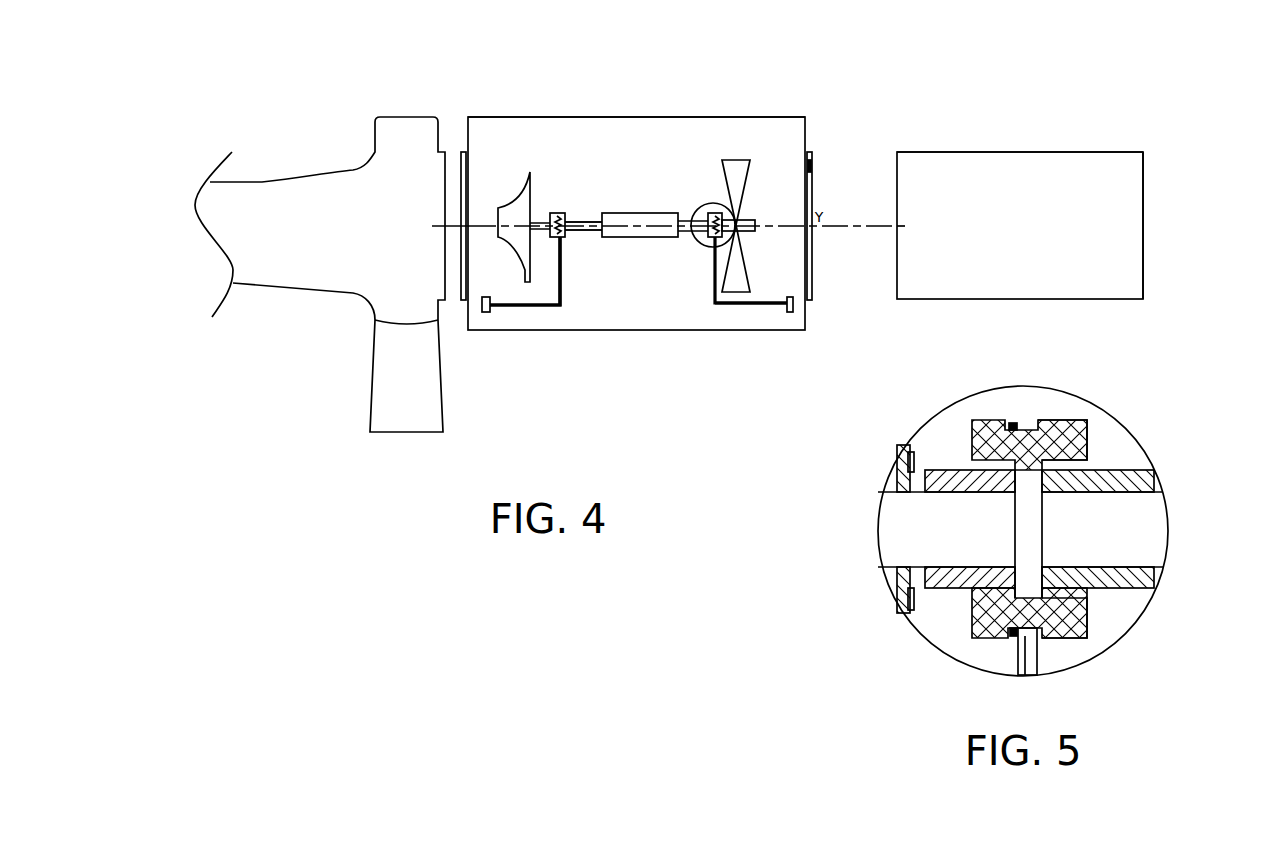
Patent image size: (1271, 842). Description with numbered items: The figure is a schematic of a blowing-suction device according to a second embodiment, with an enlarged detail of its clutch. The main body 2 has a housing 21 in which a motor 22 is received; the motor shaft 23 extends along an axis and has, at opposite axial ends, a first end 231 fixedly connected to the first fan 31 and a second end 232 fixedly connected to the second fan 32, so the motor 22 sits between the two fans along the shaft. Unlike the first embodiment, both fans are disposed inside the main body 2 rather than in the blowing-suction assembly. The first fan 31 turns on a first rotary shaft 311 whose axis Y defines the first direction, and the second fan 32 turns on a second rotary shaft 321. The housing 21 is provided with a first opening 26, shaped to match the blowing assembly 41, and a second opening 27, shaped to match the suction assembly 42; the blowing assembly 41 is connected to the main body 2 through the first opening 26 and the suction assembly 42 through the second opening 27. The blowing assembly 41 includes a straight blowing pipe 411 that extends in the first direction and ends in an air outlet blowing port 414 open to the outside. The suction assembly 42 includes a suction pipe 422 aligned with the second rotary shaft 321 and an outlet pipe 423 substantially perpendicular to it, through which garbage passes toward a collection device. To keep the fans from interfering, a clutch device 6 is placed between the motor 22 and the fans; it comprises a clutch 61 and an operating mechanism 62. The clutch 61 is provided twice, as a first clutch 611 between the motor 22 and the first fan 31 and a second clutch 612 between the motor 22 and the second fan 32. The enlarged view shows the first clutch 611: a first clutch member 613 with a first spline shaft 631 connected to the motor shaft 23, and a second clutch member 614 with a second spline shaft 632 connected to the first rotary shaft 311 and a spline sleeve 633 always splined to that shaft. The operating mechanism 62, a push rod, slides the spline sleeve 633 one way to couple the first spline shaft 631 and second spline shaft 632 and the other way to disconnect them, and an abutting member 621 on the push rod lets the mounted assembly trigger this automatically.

In FIG. 4, the main body 2 is at (767, 135).
In FIG. 4, the housing 21 is at (700, 117).
In FIG. 4, the motor 22 is at (628, 214).
In FIG. 4, the motor shaft 23 is at (598, 220).
In FIG. 5, the motor shaft 23 is at (895, 517).
In FIG. 4, the first end 231 is at (690, 226).
In FIG. 4, the second end 232 is at (585, 226).
In FIG. 4, the first opening 26 is at (810, 150).
In FIG. 4, the second opening 27 is at (463, 152).
In FIG. 4, the first fan 31 is at (738, 282).
In FIG. 4, the first rotary shaft 311 is at (773, 224).
In FIG. 5, the first rotary shaft 311 is at (1142, 516).
In FIG. 4, the second fan 32 is at (527, 270).
In FIG. 4, the second rotary shaft 321 is at (482, 220).
In FIG. 4, the blowing assembly 41 is at (962, 149).
In FIG. 4, the blowing pipe 411 is at (1077, 163).
In FIG. 4, the air outlet blowing port 414 is at (1143, 177).
In FIG. 4, the suction assembly 42 is at (264, 165).
In FIG. 4, the suction pipe 422 is at (278, 257).
In FIG. 4, the outlet pipe 423 is at (403, 403).
In FIG. 4, the clutch device 6 is at (647, 364).
In FIG. 4, the clutch 61 is at (702, 262).
In FIG. 4, the first clutch 611 is at (710, 238).
In FIG. 5, the first clutch 611 is at (1123, 446).
In FIG. 4, the second clutch 612 is at (562, 238).
In FIG. 5, the first clutch member 613 is at (946, 460).
In FIG. 5, the second clutch member 614 is at (997, 416).
In FIG. 4, the operating mechanism 62 is at (758, 305).
In FIG. 5, the operating mechanism 62 is at (1040, 667).
In FIG. 4, the abutting member 621 is at (792, 312).
In FIG. 5, the first spline shaft 631 is at (965, 580).
In FIG. 5, the second spline shaft 632 is at (1090, 587).
In FIG. 5, the spline sleeve 633 is at (1053, 640).